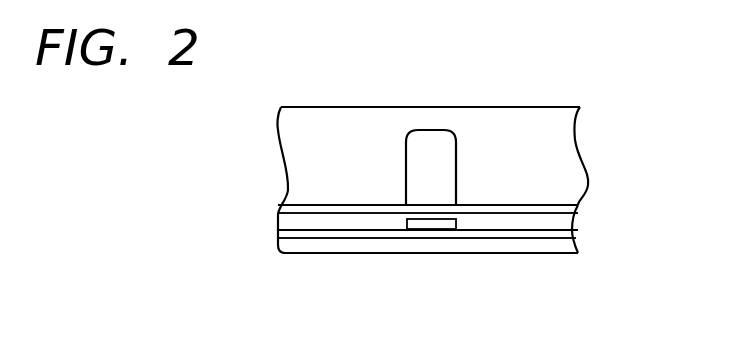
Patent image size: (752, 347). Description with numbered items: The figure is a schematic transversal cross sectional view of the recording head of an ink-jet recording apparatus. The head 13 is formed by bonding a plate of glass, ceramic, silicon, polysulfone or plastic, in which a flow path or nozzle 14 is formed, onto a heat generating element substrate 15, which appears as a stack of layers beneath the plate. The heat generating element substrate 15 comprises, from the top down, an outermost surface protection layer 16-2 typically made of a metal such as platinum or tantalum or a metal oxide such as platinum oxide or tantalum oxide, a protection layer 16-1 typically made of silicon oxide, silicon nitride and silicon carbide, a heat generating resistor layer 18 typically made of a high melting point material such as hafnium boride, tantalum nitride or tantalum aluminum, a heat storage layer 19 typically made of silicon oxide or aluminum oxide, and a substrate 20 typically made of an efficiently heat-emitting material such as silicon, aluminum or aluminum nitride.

The head 13 is at (334, 107).
The flow path (nozzle) 14 is at (432, 129).
The heat generating element substrate 15 is at (448, 267).
The protection layer 16-1 is at (370, 220).
The outermost surface protection layer 16-2 is at (297, 210).
The heat generating resistor layer 18 is at (433, 229).
The heat storage layer 19 is at (478, 233).
The substrate 20 is at (533, 240).